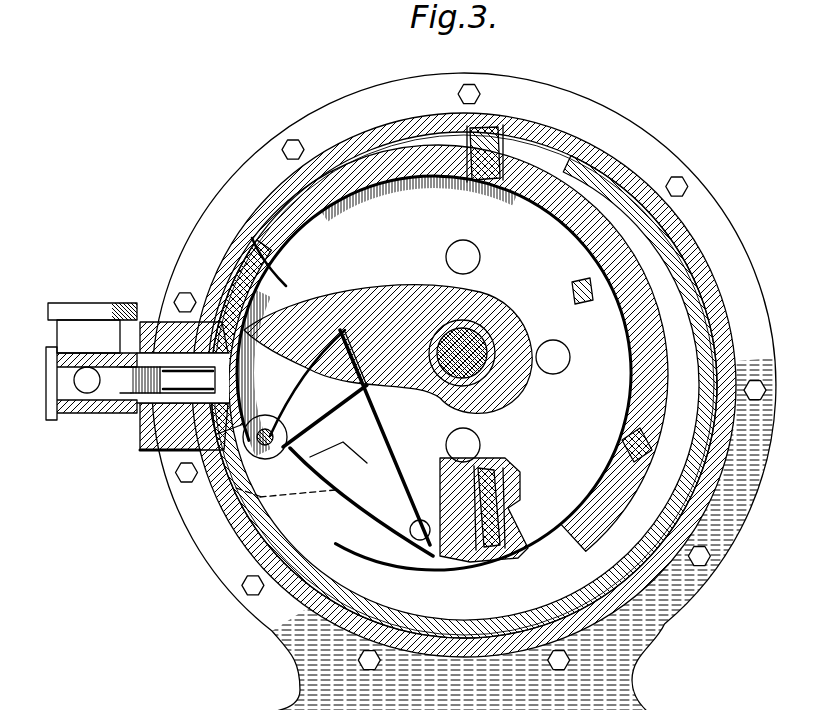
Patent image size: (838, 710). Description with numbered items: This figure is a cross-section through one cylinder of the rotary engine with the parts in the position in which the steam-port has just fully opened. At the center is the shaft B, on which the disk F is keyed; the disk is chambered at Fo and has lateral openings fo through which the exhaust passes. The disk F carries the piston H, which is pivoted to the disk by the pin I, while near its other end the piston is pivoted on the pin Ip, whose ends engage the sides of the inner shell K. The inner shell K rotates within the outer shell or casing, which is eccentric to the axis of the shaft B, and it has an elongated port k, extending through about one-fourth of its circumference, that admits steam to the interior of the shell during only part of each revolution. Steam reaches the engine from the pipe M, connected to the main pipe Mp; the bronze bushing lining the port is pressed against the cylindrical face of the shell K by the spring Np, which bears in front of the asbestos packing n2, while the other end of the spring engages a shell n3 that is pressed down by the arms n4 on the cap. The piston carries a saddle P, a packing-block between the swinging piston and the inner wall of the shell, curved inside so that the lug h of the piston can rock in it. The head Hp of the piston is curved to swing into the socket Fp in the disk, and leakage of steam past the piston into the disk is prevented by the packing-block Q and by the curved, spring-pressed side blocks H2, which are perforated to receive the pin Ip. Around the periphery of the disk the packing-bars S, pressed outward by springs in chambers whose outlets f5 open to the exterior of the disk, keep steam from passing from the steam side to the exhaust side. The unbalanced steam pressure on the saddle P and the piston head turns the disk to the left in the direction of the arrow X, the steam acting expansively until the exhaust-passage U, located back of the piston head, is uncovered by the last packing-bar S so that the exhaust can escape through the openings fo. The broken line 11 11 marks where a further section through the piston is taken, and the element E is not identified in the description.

The base E is at (458, 662).
The inner shell K is at (300, 592).
The lug of the piston h is at (232, 515).
The elongated port k is at (400, 152).
The disk F is at (560, 219).
The packing-block Q is at (258, 262).
The socket in the disk Fp is at (430, 288).
The shaft B is at (500, 323).
The lateral openings fo is at (481, 259).
The packing-bars S is at (497, 160).
The outlets f5 is at (463, 158).
The piston H is at (394, 455).
The head of the piston Hp is at (343, 468).
The curved side blocks H2 is at (345, 366).
The pin Ip is at (273, 437).
The pin I is at (418, 523).
The exhaust-passage U is at (314, 469).
The arrow X is at (410, 233).
The chamber of the disk Fo is at (416, 261).
The pipe M is at (150, 442).
The shell n3 is at (135, 407).
The arms n4 is at (112, 400).
The main pipe Mp is at (75, 318).
The spring Np is at (130, 320).
The asbestos packing n2 is at (128, 368).
The saddle P is at (215, 470).
The broken section line 11 is at (186, 240).